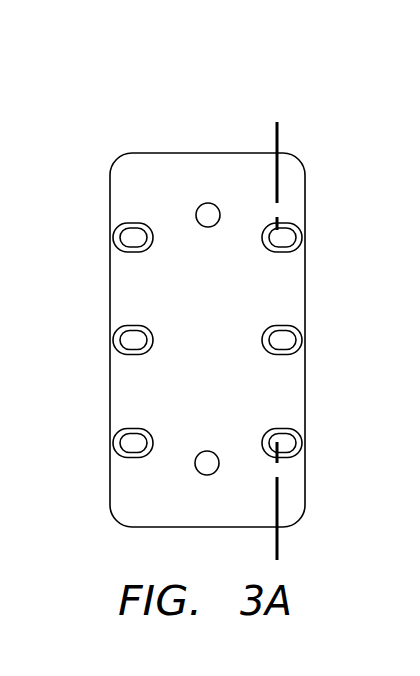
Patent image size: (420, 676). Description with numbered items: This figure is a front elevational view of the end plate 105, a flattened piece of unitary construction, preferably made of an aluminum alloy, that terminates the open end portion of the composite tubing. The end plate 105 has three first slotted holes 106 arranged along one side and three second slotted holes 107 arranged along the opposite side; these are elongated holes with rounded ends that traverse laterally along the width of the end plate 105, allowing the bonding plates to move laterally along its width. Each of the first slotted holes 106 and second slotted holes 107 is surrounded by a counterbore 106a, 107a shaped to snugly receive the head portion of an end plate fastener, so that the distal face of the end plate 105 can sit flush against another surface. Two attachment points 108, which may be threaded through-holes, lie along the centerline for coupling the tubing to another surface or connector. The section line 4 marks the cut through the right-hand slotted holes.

The end plate 105 is at (109, 126).
The first slotted holes 106 is at (128, 234).
The counterbores 106a is at (128, 250).
The second slotted holes 107 is at (289, 234).
The counterbores 107a is at (287, 250).
The attachment points 108 is at (208, 213).
The section line 4- 4 is at (298, 133).